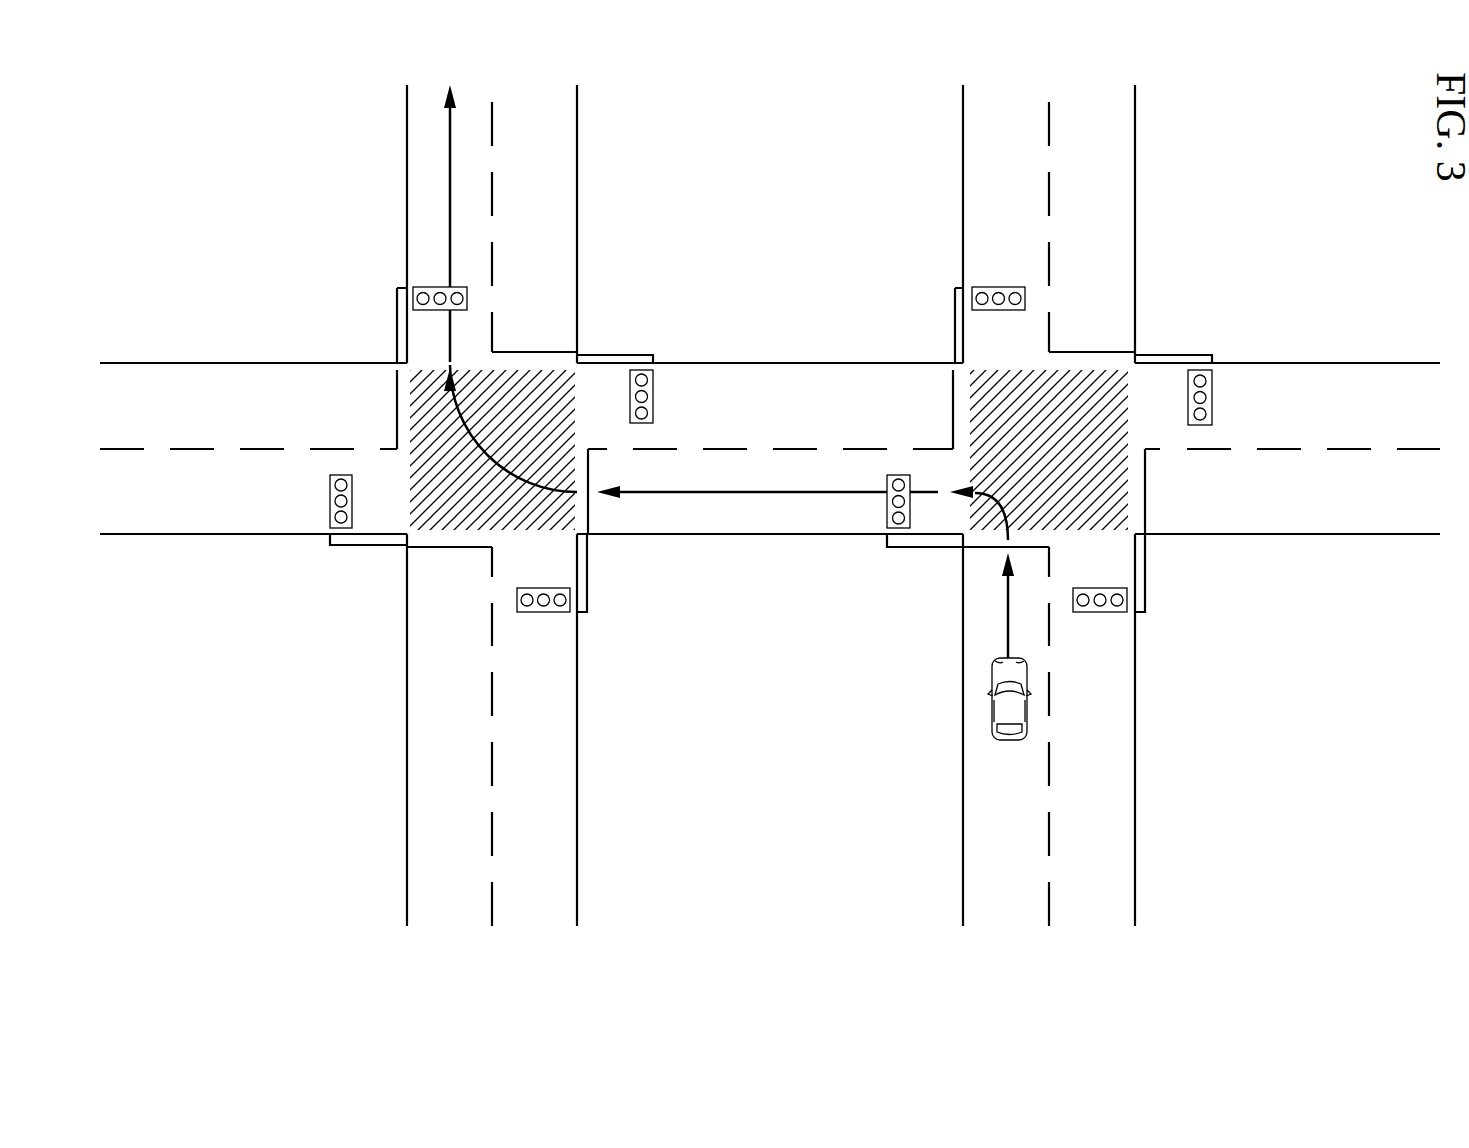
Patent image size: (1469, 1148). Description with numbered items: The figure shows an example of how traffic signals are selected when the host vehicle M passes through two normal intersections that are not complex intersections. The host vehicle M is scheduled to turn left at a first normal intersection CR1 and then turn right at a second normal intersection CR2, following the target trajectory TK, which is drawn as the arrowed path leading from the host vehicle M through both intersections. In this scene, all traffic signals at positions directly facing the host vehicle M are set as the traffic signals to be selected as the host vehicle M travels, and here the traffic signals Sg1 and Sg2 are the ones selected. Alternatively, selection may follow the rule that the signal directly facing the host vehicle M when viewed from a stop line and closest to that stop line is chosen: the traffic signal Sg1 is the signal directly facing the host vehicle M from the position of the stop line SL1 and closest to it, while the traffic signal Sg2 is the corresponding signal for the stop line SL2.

The traffic signal Sg1 is at (1002, 287).
The traffic signal Sg2 is at (330, 497).
The first normal intersection CR1 is at (1128, 398).
The second normal intersection CR2 is at (572, 399).
The stop line SL1 is at (983, 547).
The stop line SL2 is at (590, 515).
The target trajectory TK is at (1007, 635).
The host vehicle M is at (1010, 742).